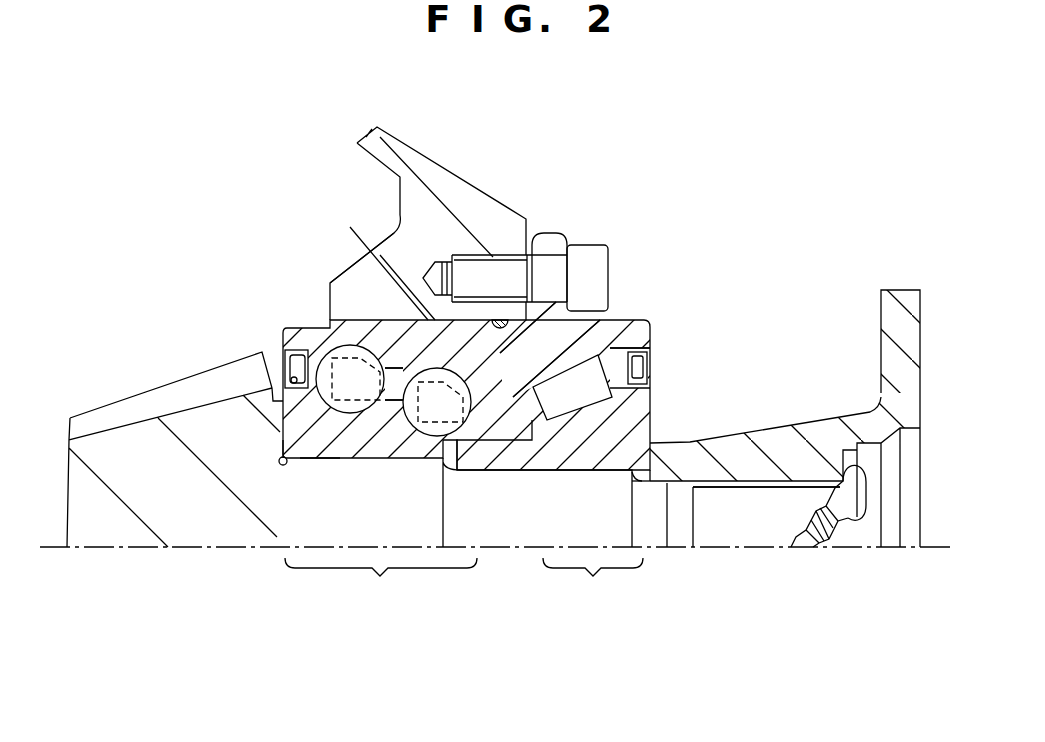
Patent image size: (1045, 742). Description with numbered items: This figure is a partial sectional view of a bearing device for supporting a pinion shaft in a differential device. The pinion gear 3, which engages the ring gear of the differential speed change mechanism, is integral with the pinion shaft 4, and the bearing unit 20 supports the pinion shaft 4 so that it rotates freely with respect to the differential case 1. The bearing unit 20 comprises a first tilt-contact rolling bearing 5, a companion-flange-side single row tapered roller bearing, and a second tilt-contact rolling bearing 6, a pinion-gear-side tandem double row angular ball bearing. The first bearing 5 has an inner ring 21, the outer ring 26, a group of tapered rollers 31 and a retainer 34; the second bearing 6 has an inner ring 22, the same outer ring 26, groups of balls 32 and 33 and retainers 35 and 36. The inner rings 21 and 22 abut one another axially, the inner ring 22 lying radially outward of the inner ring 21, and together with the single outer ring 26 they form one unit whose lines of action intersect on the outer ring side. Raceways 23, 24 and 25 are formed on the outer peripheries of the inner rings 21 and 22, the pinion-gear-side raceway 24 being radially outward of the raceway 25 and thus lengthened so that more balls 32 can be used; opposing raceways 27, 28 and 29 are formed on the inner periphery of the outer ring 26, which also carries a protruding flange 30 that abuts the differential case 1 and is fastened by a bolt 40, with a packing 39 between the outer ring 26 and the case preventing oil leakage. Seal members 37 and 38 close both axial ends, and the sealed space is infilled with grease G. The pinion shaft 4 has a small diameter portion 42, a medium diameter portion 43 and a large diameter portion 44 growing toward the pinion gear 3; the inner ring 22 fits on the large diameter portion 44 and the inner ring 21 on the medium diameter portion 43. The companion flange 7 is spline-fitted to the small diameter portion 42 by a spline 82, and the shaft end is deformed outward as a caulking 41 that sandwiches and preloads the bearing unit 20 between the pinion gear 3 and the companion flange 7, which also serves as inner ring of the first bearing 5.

The differential case 1 is at (430, 152).
The pinion gear 3 is at (162, 380).
The pinion shaft 4 is at (721, 530).
The first tilt-contact rolling bearing 5 is at (593, 583).
The second tilt-contact rolling bearing 6 is at (381, 584).
The companion flange 7 is at (910, 290).
The bearing unit 20 is at (668, 321).
The inner ring 21 is at (645, 472).
The inner ring 22 is at (303, 452).
The raceway 23 is at (600, 418).
The raceway 24 is at (338, 393).
The raceway 25 is at (416, 440).
The outer ring 26 is at (577, 380).
The raceway 27 is at (637, 322).
The raceway 28 is at (348, 345).
The raceway 29 is at (343, 262).
The flange 30 is at (548, 232).
The group of tapered rollers 31 is at (608, 350).
The group of balls 32 is at (318, 348).
The group of balls 33 is at (350, 227).
The retainer 34 is at (512, 422).
The retainer 35 is at (387, 403).
The retainer 36 is at (490, 415).
The seal member 37 is at (650, 368).
The seal member 38 is at (292, 372).
The packing 39 is at (497, 315).
The bolt 40 is at (592, 248).
The caulking 41 is at (850, 512).
The small diameter portion 42 is at (757, 523).
The medium diameter portion 43 is at (605, 513).
The large diameter portion 44 is at (318, 460).
The spline 82 is at (767, 488).
The grease G is at (509, 472).